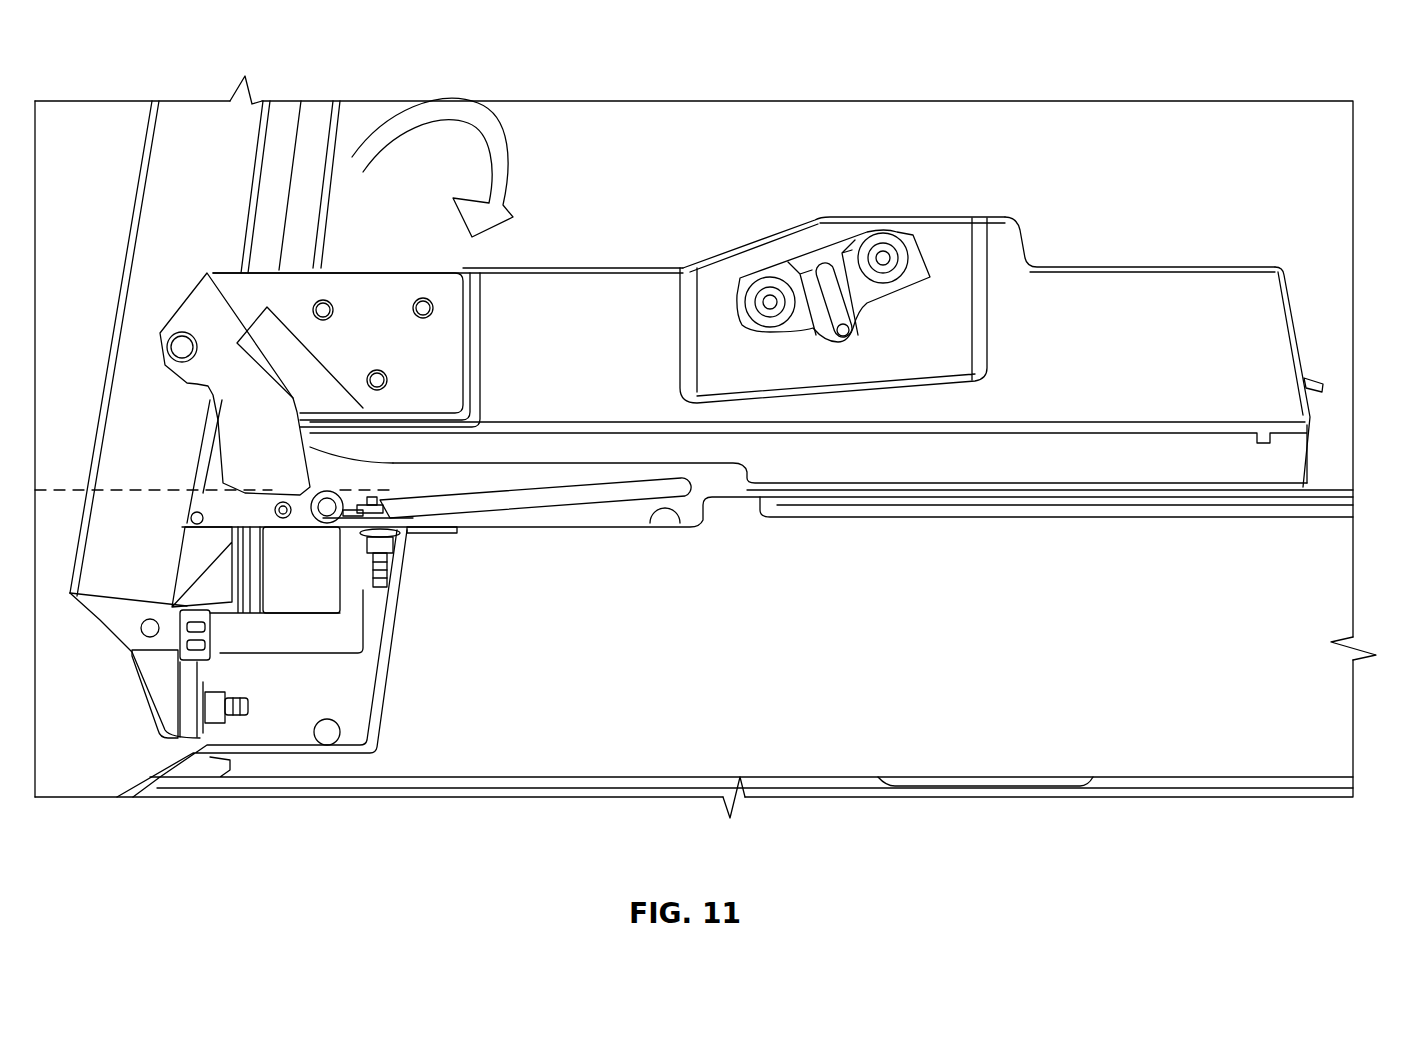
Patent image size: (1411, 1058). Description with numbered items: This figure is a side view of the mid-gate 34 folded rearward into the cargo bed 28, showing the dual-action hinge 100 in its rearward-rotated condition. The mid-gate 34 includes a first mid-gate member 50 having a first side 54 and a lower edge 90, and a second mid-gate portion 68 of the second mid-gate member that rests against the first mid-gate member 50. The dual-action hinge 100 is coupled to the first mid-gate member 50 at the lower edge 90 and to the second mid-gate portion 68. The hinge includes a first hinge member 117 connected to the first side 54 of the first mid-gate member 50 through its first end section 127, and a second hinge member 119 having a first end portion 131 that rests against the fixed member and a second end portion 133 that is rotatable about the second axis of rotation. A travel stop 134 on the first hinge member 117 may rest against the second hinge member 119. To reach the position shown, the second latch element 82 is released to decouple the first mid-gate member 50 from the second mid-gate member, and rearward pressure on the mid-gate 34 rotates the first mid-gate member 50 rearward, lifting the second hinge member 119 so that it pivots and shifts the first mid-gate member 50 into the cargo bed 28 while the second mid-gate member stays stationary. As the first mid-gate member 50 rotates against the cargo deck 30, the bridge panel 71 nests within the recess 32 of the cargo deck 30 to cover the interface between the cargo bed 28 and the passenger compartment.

The cargo bed 28 is at (1325, 490).
The cargo deck 30 is at (1343, 494).
The recess 32 is at (680, 525).
The mid-gate 34 is at (730, 222).
The first mid-gate member 50 is at (1055, 235).
The first side 54 is at (1188, 298).
The second mid-gate portion 68 is at (158, 150).
The bridge panel 71 is at (557, 487).
The second latch element 82 is at (820, 265).
The lower edge 90 is at (278, 268).
The dual-action hinge 100 is at (138, 410).
The first hinge member 117 is at (462, 380).
The second hinge member 119 is at (232, 430).
The first end section 127 is at (392, 290).
The first end portion 131 is at (164, 345).
The second end portion 133 is at (302, 493).
The travel stop 134 is at (258, 345).